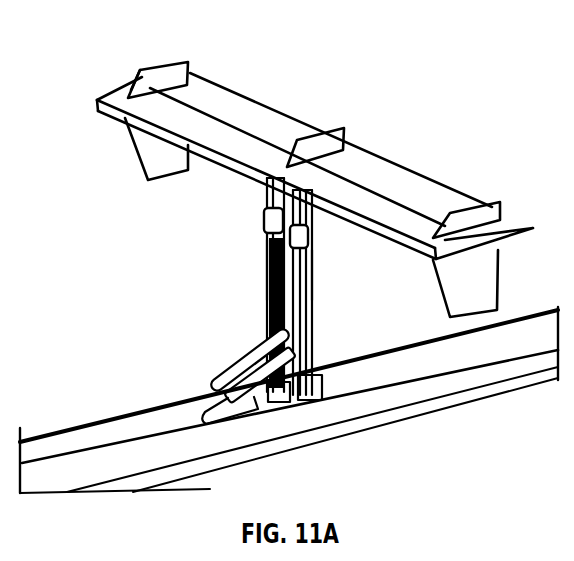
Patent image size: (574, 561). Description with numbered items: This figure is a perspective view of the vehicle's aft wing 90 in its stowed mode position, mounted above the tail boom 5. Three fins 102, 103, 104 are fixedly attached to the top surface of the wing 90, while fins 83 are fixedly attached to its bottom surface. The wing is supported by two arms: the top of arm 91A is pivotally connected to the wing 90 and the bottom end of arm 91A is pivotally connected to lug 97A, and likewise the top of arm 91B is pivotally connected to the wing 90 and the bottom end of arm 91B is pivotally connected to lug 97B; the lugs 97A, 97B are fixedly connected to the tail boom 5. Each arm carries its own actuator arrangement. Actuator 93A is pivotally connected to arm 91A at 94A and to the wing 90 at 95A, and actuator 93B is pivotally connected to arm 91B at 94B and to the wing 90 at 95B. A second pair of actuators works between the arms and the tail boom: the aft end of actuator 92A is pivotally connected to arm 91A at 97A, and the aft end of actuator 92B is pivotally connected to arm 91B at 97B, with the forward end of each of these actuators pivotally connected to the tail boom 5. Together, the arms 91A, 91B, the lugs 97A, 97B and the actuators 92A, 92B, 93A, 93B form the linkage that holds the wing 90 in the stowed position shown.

The tail boom 5 is at (417, 413).
The fins 83 is at (127, 150).
The wing 90 is at (383, 158).
The arm 91A is at (265, 283).
The arm 91B is at (315, 312).
The actuator 92A is at (245, 347).
The actuator 92B is at (223, 373).
The actuator 93A is at (265, 220).
The actuator 93B is at (317, 260).
The pivot connection on arm 94A is at (268, 238).
The pivot connection on arm 94B is at (318, 293).
The pivot connection on wing 95A is at (270, 192).
The pivot connection on wing 95B is at (308, 217).
The lug 97A is at (283, 392).
The lug 97B is at (320, 397).
The fin 102 is at (197, 50).
The fin 103 is at (357, 110).
The fin 104 is at (497, 202).